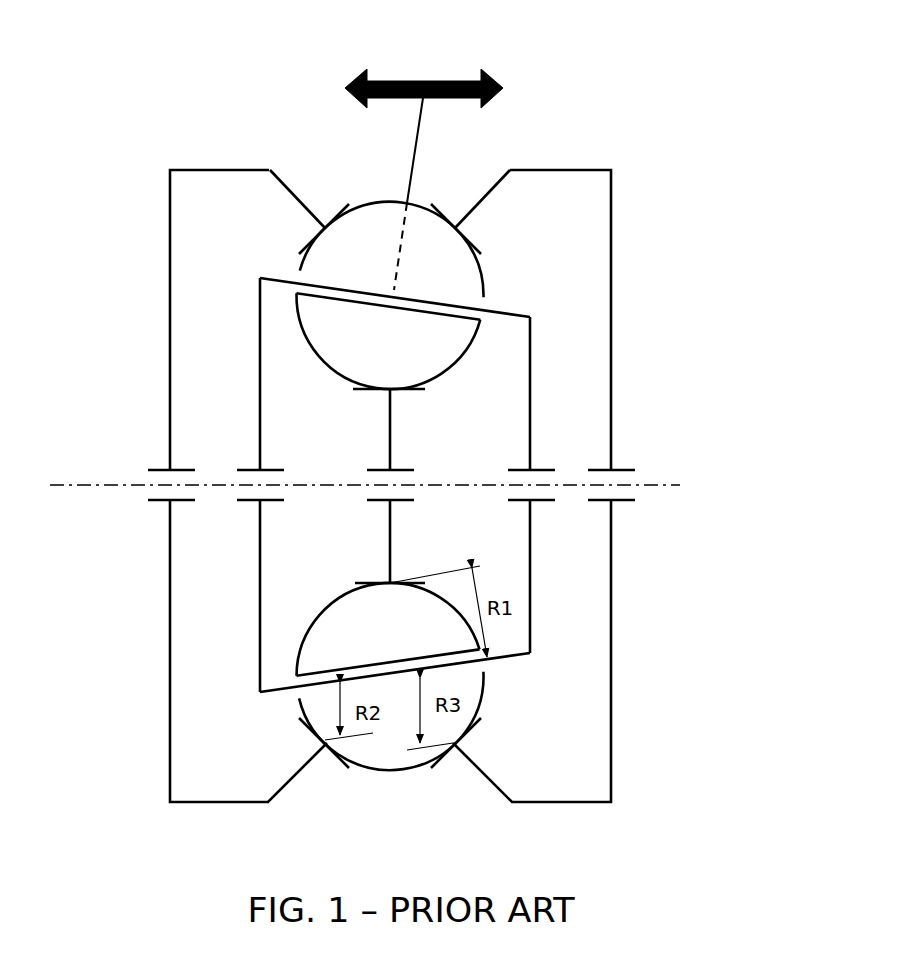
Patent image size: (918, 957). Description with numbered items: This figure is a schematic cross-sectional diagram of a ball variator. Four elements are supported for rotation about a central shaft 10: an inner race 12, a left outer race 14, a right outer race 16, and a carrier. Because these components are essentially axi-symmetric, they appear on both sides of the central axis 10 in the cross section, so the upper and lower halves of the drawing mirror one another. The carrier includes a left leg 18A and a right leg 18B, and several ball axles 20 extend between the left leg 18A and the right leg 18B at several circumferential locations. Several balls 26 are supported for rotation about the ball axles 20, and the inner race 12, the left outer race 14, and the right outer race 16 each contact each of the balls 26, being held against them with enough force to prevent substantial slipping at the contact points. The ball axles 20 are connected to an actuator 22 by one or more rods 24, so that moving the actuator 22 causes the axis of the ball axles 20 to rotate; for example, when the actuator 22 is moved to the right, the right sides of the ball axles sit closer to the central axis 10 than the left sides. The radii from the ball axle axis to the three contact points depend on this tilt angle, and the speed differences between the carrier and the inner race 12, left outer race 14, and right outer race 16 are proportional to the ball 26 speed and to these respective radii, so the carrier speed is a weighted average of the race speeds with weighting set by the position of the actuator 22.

The central shaft 10 is at (112, 484).
The inner race 12 is at (390, 447).
The left outer race 14 is at (293, 192).
The right outer race 16 is at (482, 195).
The left leg 18A is at (262, 388).
The right leg 18B is at (531, 430).
The ball axle 20 is at (275, 277).
The actuator 22 is at (414, 78).
The rod 24 is at (413, 170).
The ball 26 is at (389, 486).